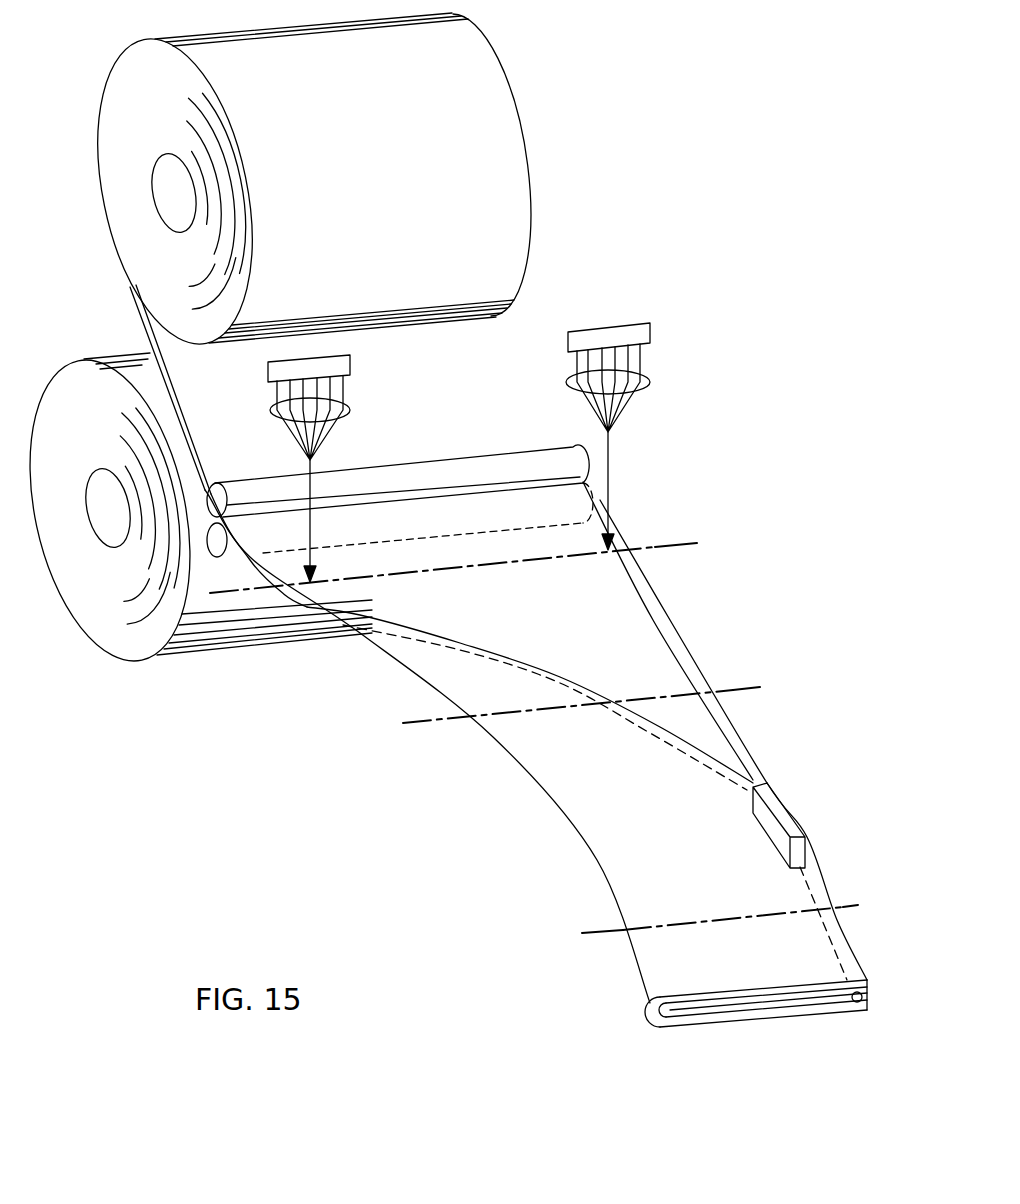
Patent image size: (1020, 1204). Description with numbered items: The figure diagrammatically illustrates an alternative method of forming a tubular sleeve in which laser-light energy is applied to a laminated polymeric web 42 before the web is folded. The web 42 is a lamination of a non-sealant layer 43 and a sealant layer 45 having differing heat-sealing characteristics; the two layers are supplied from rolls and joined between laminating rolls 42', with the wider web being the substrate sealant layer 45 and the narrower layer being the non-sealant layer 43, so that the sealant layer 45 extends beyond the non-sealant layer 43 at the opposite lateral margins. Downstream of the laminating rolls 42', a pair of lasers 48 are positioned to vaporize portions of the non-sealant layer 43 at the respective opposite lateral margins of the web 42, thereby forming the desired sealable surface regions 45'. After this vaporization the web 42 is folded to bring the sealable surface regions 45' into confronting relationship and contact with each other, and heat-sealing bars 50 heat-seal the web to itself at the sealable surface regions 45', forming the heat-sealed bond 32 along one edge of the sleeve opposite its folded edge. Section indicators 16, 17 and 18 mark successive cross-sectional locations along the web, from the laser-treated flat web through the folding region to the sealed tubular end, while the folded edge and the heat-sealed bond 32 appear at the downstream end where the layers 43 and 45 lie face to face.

The non-sealant layer 43 is at (490, 88).
The sealant layer 45 is at (396, 705).
The lasers 48 is at (340, 362).
The laminating rolls 42' is at (400, 491).
The sealable surface regions 45' is at (514, 632).
The web 42 is at (536, 758).
The heat-sealing bars 50 is at (787, 813).
The heat-sealed bond 32 is at (853, 1007).
The section line 16- 16 is at (210, 593).
The section line 17- 17 is at (403, 723).
The section line 18- 18 is at (582, 933).